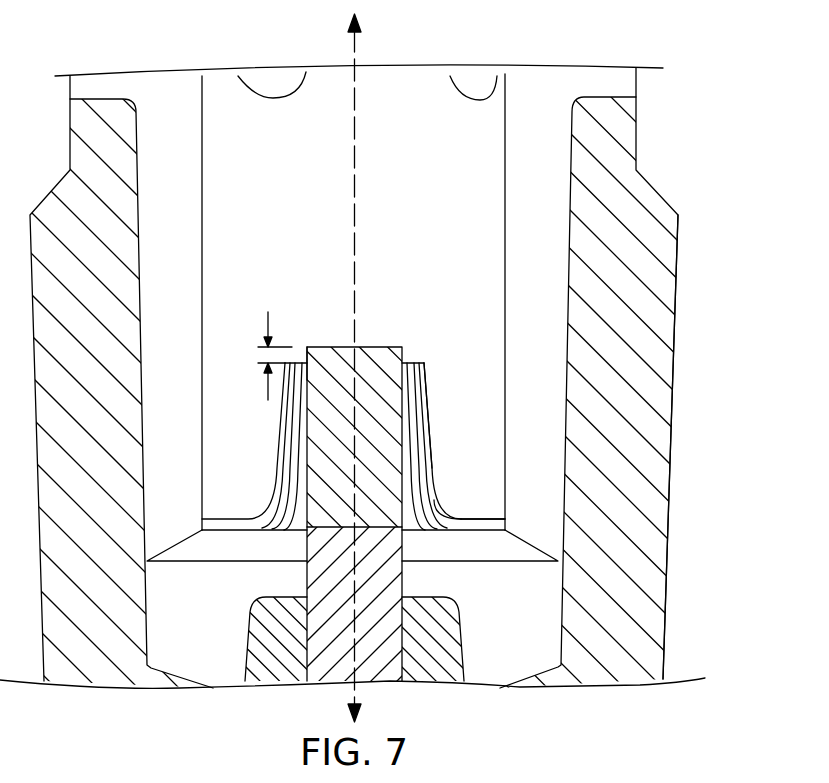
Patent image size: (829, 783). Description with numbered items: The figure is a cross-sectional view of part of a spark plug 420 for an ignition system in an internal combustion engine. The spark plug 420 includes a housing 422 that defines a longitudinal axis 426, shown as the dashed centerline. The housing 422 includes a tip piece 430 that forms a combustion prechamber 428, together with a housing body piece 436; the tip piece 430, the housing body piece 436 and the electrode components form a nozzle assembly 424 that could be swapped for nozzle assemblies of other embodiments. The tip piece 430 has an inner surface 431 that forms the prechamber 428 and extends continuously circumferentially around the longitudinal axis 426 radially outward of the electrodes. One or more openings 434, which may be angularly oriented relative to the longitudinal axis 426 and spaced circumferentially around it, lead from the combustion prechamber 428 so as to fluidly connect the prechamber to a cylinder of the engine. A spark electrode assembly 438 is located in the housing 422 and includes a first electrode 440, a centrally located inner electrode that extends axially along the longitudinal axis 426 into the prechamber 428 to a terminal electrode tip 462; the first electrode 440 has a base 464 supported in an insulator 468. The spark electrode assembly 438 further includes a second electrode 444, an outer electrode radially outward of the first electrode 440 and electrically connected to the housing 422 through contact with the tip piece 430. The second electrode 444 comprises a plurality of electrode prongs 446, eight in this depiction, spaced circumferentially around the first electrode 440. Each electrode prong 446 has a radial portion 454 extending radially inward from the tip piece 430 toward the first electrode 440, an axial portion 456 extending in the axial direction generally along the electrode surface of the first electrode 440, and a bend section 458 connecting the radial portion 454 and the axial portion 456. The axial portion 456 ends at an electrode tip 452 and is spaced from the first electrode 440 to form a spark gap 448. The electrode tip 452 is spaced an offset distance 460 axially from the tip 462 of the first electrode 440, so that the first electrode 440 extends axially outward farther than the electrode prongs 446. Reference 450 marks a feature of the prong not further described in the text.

The spark plug 420 is at (730, 391).
The housing 422 is at (663, 678).
The nozzle assembly 424 is at (676, 548).
The longitudinal axis 426 is at (357, 47).
The combustion prechamber 428 is at (261, 283).
The tip piece 430 is at (556, 112).
The inner surface 431 is at (203, 240).
The openings 434 is at (270, 95).
The housing body piece 436 is at (668, 282).
The spark electrode assembly 438 is at (418, 329).
The first electrode 440 is at (320, 355).
The second electrode 444 is at (443, 482).
The electrode prong 446 is at (436, 498).
The spark gap 448 is at (408, 363).
The outer end of seal layer 450 is at (500, 520).
The electrode tip 452 is at (425, 365).
The radial portion 454 is at (468, 531).
The axial portion 456 is at (422, 408).
The bend section 458 is at (446, 527).
The offset distance 460 is at (267, 384).
The electrode tip 462 is at (367, 347).
The base 464 is at (307, 548).
The insulator 468 is at (453, 672).